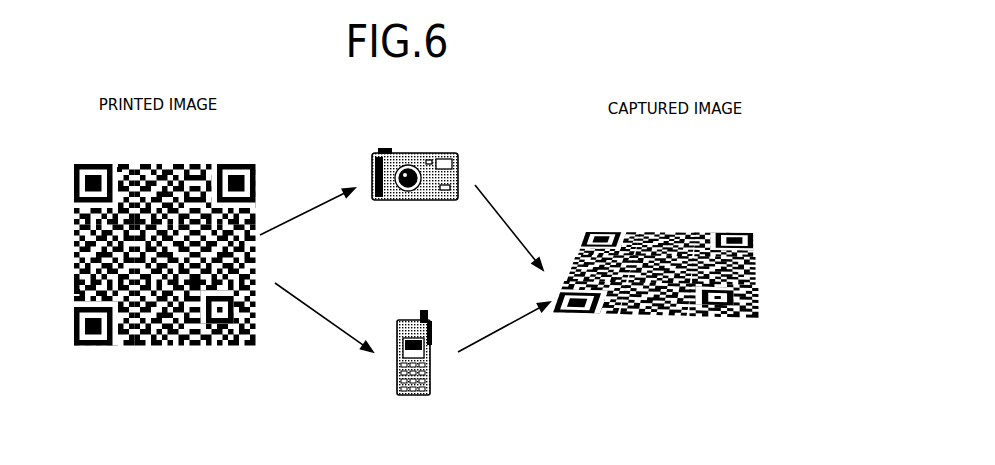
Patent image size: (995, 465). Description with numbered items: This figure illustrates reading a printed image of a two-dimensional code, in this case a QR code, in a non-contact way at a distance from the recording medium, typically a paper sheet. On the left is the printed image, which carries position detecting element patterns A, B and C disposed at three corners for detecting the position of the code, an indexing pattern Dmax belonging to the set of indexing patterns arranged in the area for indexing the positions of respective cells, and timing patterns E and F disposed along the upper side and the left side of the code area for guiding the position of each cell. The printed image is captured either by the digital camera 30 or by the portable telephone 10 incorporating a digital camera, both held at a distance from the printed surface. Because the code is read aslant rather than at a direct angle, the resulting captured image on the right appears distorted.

The digital camera 30 is at (423, 153).
The portable telephone with a digital camera 10 is at (412, 395).
The position detecting element pattern A is at (72, 184).
The position detecting element pattern B is at (238, 165).
The position detecting element pattern C is at (84, 345).
The indexing pattern Dmax is at (218, 325).
The timing pattern E is at (121, 168).
The timing pattern F is at (78, 293).